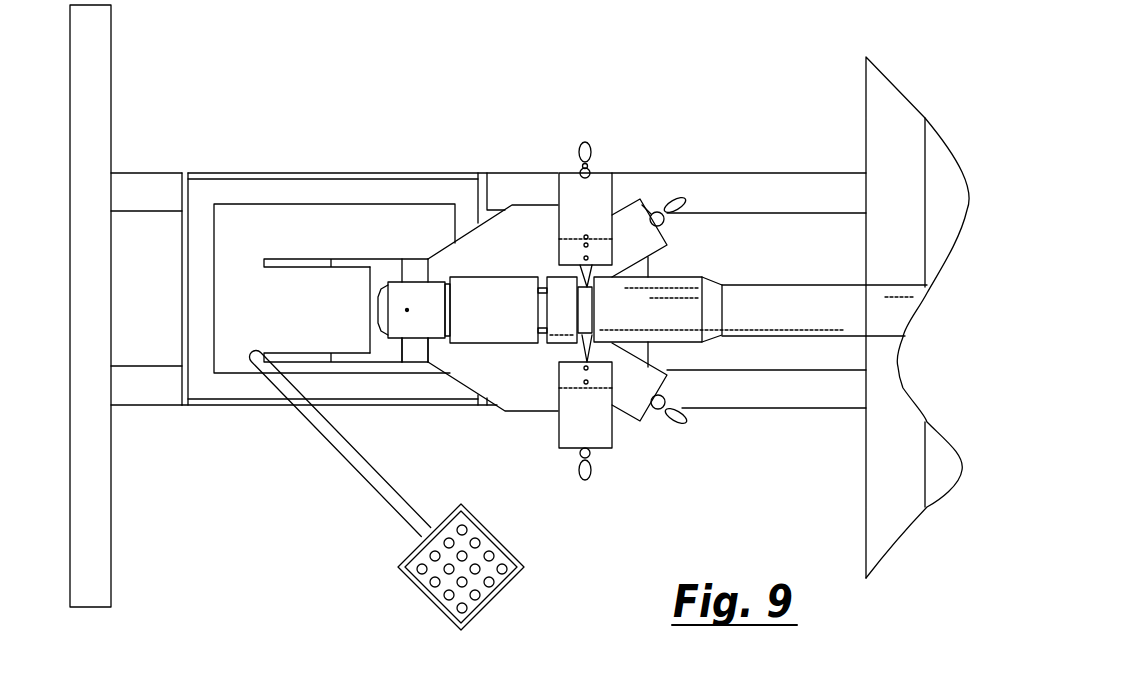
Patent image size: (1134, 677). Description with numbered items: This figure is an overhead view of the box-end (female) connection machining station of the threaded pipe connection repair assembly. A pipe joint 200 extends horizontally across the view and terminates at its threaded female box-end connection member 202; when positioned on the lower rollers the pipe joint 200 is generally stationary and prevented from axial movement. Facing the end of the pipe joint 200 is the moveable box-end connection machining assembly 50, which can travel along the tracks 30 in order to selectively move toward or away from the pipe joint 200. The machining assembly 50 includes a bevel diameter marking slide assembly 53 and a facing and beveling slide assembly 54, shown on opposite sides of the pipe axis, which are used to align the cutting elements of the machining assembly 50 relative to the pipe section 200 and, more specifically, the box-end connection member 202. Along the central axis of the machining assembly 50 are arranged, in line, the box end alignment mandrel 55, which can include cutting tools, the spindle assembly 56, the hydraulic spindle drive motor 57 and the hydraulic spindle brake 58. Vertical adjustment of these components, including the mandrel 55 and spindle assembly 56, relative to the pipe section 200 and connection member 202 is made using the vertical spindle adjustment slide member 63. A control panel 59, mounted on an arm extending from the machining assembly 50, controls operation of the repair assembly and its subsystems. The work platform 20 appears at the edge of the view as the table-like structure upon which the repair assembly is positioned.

The work platform 20 is at (888, 117).
The tracks 30 is at (755, 193).
The box-end connection machining assembly 50 is at (465, 195).
The bevel diameter marking slide assembly 53 is at (597, 197).
The facing and beveling slide assembly 54 is at (598, 437).
The box end alignment mandrel 55 is at (562, 296).
The spindle assembly 56 is at (498, 328).
The hydraulic spindle drive motor 57 is at (422, 293).
The hydraulic spindle brake 58 is at (383, 306).
The control panel 59 is at (500, 580).
The vertical spindle adjustment slide member 63 is at (415, 352).
The pipe joint 200 is at (823, 322).
The threaded female box-end connection member 202 is at (665, 297).